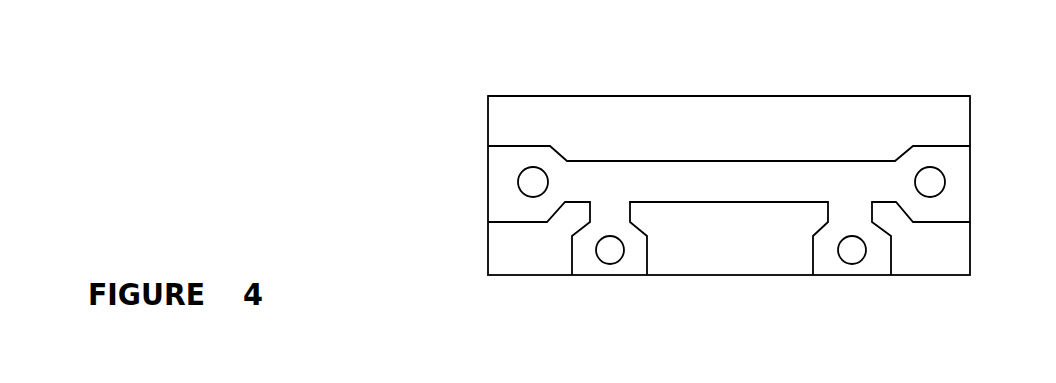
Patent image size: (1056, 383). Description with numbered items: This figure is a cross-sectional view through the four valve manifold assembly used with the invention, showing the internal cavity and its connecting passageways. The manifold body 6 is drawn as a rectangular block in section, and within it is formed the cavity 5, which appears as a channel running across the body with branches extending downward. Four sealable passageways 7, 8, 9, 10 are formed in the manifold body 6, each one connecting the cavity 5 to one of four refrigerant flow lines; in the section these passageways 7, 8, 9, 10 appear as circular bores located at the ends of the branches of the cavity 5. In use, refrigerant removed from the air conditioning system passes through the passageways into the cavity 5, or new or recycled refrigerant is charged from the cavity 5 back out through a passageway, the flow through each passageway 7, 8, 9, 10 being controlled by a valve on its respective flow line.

The cavity 5 is at (759, 135).
The manifold body 6 is at (654, 96).
The sealable passageway 7 is at (518, 187).
The sealable passageway 8 is at (943, 173).
The sealable passageway 9 is at (608, 264).
The sealable passageway 10 is at (852, 264).